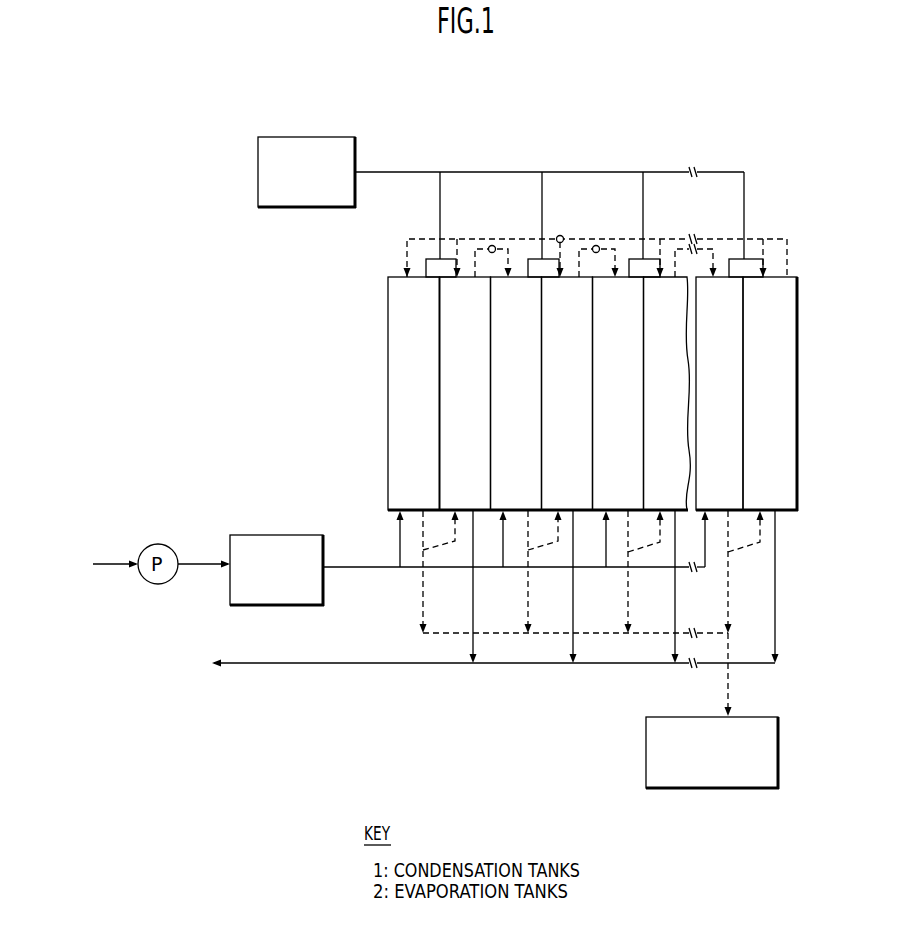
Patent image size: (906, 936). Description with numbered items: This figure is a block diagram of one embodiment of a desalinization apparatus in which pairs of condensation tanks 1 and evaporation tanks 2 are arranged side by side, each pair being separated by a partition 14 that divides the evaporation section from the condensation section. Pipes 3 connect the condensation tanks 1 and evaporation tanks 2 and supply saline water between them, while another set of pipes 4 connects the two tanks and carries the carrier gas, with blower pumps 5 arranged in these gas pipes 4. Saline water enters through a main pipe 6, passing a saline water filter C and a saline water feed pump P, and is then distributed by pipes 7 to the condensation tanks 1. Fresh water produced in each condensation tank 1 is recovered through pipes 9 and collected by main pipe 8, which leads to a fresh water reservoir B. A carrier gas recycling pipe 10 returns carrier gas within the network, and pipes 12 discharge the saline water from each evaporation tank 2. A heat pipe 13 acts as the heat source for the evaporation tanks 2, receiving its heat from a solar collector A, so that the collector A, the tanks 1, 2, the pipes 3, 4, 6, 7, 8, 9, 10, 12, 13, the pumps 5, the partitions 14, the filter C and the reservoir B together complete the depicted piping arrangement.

The condensation tank 1 is at (416, 395).
The evaporation tank 2 is at (468, 395).
The pipe 3 is at (440, 258).
The pipe 4 is at (508, 256).
The blower pump 5 is at (494, 245).
The main pipe 6 is at (201, 561).
The pipe 7 is at (400, 547).
The main pipe 8 is at (490, 633).
The pipe 9 is at (421, 584).
The carrier gas recycling pipe 10 is at (440, 540).
The pipe 12 is at (472, 608).
The heat pipe 13 is at (484, 172).
The partition 14 is at (438, 364).
The solar collector A is at (289, 137).
The fresh water reservoir B is at (680, 717).
The saline water filter C is at (259, 535).